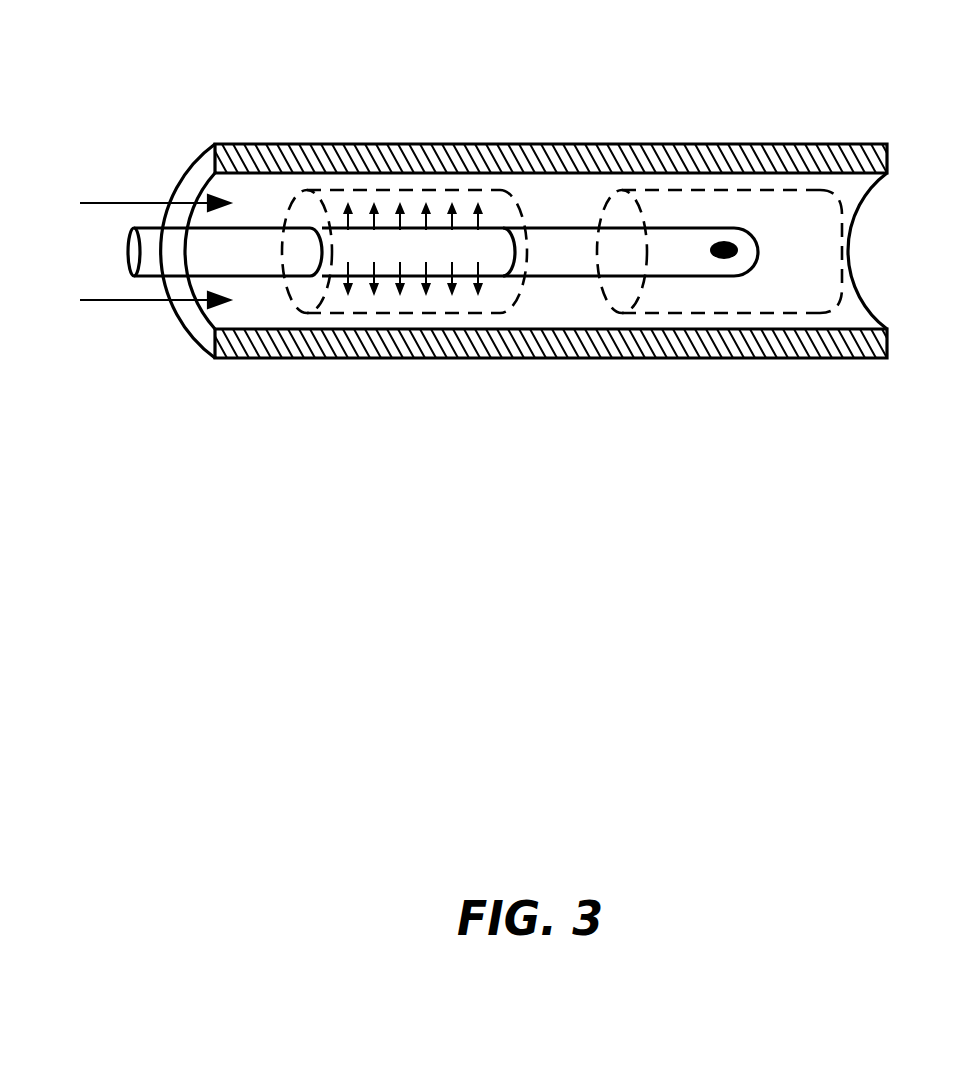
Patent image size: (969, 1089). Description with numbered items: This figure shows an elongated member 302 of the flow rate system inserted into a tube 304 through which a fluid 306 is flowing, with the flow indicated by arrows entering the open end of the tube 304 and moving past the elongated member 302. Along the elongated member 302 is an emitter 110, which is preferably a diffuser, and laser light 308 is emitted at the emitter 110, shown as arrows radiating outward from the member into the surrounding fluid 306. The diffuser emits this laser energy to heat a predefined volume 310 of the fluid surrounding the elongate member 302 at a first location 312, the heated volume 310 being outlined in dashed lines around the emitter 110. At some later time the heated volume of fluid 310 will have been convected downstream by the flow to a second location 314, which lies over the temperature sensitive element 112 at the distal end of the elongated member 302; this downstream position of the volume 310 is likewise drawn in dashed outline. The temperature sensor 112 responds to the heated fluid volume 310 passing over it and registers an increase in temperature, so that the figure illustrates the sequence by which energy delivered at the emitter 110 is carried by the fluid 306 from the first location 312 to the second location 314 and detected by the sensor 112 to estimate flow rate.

The elongated member 302 is at (262, 262).
The tube 304 is at (277, 144).
The fluid 306 is at (122, 203).
The laser light 308 is at (478, 268).
The predefined volume of fluid 310 is at (497, 190).
The location 312 is at (397, 127).
The location 314 is at (719, 127).
The emitter 110 is at (363, 260).
The temperature sensor 112 is at (724, 256).